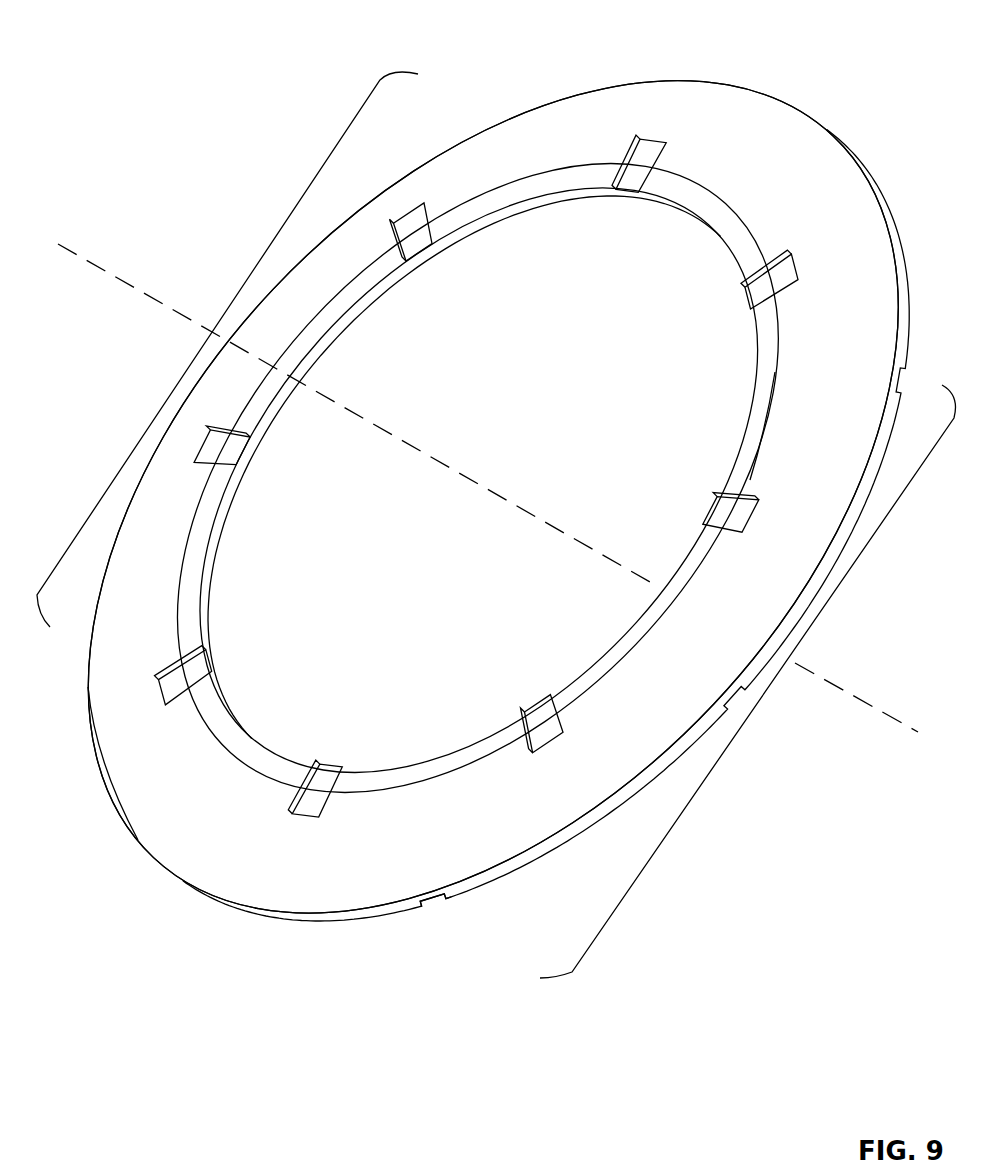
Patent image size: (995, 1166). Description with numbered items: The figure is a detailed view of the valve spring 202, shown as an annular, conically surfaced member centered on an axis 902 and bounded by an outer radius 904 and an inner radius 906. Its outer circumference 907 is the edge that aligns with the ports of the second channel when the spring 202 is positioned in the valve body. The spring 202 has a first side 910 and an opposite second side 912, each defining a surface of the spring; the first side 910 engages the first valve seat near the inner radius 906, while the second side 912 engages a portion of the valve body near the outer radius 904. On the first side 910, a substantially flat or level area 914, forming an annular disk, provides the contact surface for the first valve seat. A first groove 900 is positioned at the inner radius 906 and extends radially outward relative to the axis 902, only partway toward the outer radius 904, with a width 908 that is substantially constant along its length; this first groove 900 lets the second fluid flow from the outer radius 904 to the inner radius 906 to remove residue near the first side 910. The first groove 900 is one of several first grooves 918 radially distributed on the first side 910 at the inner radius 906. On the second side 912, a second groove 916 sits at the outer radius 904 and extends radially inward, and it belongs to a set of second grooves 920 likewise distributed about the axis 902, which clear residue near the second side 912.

The valve spring 202 is at (772, 160).
The first groove 900 is at (712, 510).
The axis 902 is at (379, 421).
The outer radius 904 is at (180, 880).
The inner radius 906 is at (262, 740).
The circumference 907 is at (700, 80).
The width 908 is at (712, 567).
The first side 910 is at (808, 380).
The second side 912 is at (888, 218).
The area 914 is at (455, 760).
The second groove 916 is at (438, 908).
The first grooves 918 is at (245, 286).
The second grooves 920 is at (725, 749).